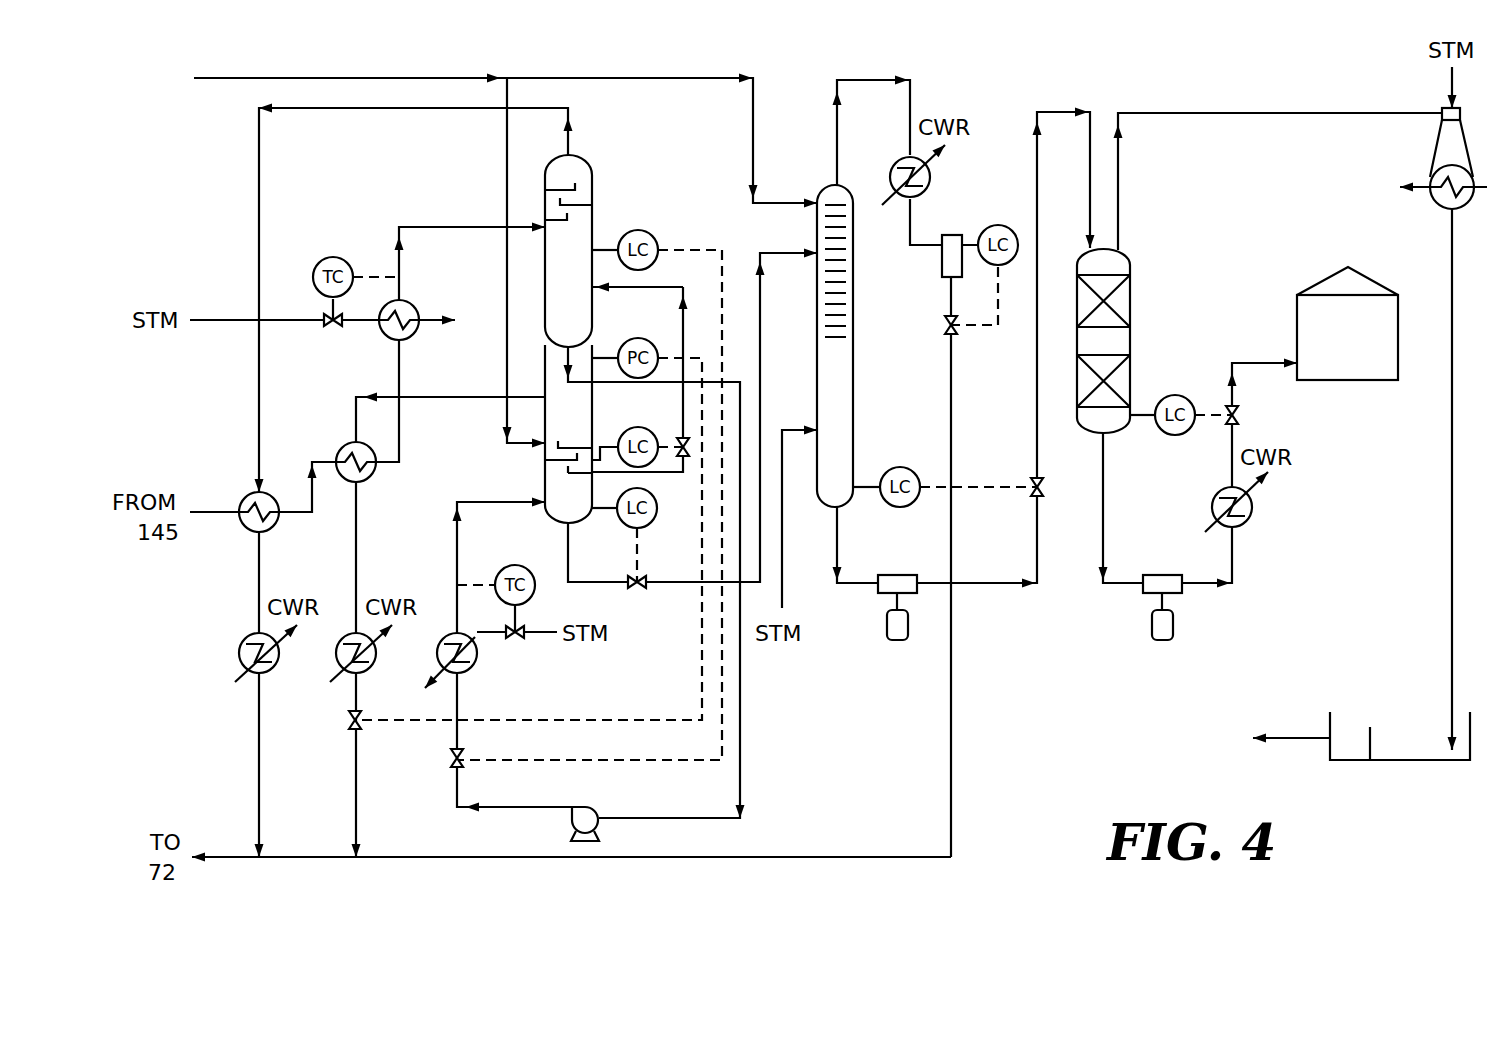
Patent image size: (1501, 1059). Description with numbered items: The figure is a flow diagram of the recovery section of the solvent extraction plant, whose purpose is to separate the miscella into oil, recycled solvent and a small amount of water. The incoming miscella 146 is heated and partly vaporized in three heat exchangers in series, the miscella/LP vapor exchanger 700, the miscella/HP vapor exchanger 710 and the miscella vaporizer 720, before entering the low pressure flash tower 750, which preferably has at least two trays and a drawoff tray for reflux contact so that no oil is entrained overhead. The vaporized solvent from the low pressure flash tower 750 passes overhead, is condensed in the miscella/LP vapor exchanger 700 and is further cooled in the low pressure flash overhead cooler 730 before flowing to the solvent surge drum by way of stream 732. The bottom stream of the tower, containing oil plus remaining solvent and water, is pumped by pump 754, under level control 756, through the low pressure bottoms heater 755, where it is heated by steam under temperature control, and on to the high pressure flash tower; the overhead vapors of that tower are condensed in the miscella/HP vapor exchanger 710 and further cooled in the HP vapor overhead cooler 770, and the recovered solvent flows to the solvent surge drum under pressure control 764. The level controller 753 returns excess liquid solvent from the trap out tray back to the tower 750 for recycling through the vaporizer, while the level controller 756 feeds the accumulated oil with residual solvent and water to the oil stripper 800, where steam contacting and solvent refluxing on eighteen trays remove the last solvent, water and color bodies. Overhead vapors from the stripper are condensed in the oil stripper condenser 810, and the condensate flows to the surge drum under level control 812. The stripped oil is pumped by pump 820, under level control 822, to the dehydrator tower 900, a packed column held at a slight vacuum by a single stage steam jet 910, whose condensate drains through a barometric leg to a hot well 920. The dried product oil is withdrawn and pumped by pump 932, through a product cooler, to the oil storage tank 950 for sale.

The feed stream line from unit 145 146 is at (218, 512).
The miscella/LP vapor exchanger 700 is at (270, 530).
The miscella/HP vapor exchanger 710 is at (345, 443).
The miscella vaporizer 720 is at (412, 302).
The low pressure flash overhead cooler 730 is at (247, 640).
The stream 732 is at (820, 858).
The low pressure flash tower 750 is at (575, 172).
The level controller 753 is at (637, 427).
The pump 754 is at (597, 805).
The low pressure bottoms heater 755 is at (476, 668).
The level controller 756 is at (637, 228).
The pressure control 764 is at (637, 338).
The HP vapor overhead cooler 770 is at (333, 656).
The oil stripper 800 is at (855, 367).
The oil stripper condenser 810 is at (893, 162).
The level control 812 is at (998, 224).
The pump 820 is at (893, 572).
The level control 822 is at (895, 465).
The dehydrator tower 900 is at (1131, 300).
The single stage steam jet 910 is at (1428, 152).
The hot well 920 is at (1402, 761).
The pump 932 is at (1160, 572).
The oil storage tank 950 is at (1322, 283).